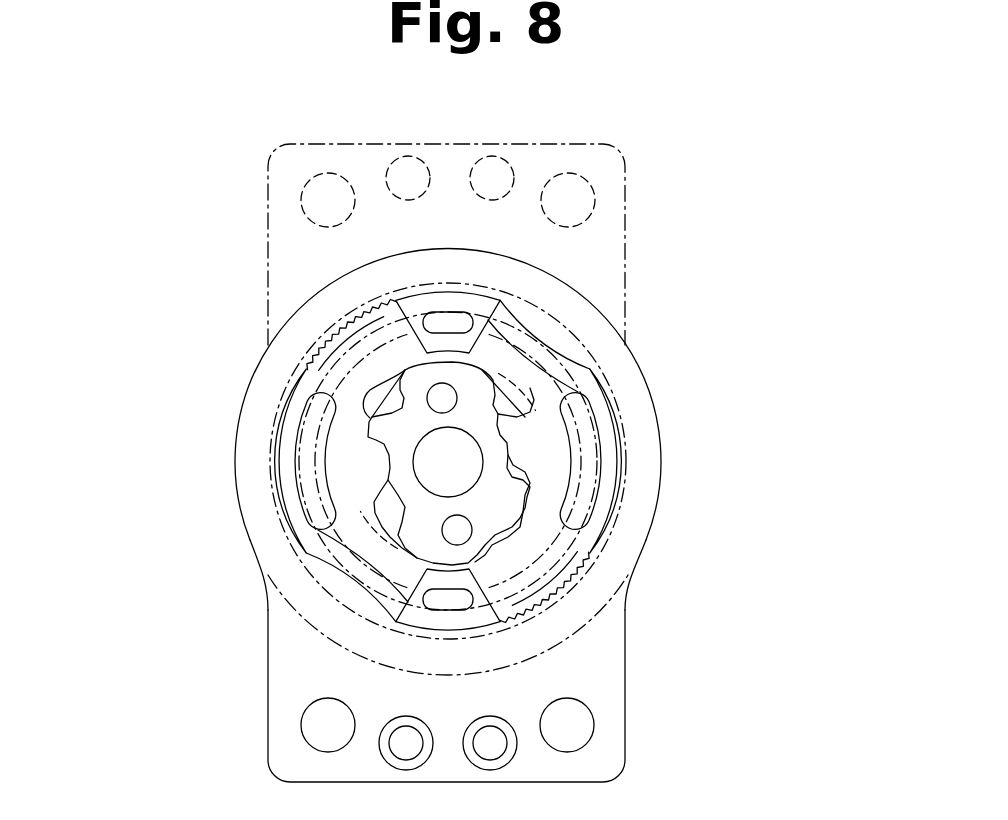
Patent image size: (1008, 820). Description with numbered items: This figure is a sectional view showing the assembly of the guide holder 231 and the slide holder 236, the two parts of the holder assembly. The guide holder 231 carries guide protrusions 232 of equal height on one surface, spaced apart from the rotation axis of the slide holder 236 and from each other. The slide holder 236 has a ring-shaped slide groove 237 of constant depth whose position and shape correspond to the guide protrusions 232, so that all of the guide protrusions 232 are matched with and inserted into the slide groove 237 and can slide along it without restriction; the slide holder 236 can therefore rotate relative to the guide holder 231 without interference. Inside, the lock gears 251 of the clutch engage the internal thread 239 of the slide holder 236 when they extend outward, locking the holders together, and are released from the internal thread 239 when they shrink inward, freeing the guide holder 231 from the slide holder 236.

The guide holder 231 is at (600, 668).
The guide protrusions 232 is at (590, 457).
The slide holder 236 is at (610, 248).
The slide groove 237 is at (555, 352).
The internal thread 239 is at (312, 347).
The lock gears 251 is at (345, 430).